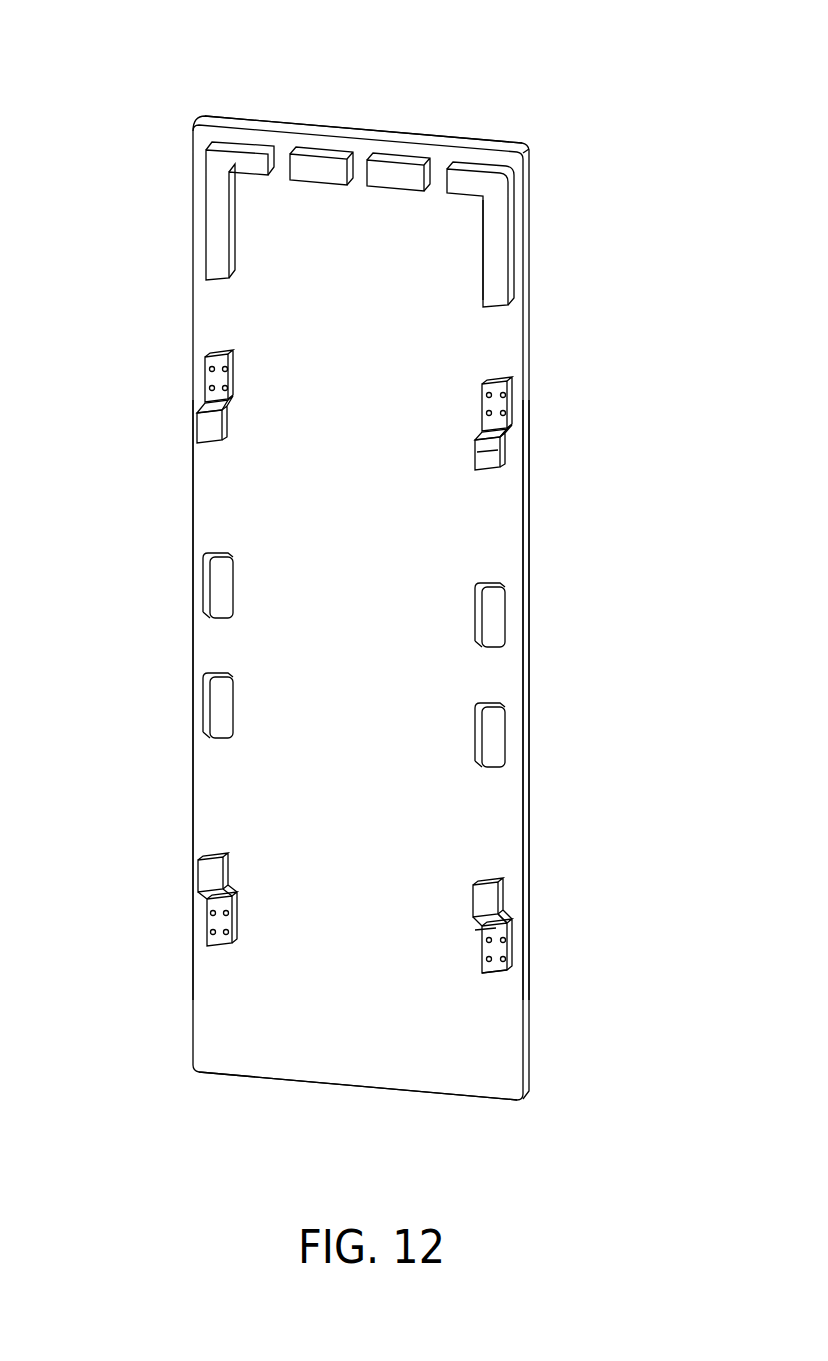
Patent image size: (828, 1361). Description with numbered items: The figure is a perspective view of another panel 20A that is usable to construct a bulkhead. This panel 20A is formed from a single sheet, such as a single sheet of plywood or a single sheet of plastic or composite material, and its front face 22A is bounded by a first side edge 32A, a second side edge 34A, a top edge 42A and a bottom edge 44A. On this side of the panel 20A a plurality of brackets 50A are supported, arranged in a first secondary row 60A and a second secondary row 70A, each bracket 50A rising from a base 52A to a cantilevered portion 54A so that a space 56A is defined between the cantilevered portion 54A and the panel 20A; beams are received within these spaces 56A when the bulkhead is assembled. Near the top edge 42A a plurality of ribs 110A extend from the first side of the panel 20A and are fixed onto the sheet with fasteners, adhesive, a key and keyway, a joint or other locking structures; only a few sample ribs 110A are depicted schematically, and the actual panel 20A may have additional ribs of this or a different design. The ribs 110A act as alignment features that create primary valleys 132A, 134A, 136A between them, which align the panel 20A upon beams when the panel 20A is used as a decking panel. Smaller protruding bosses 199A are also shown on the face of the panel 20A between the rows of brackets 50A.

The panel 20A is at (492, 670).
The front face of panel 22A is at (492, 815).
The first side edge 32A is at (191, 790).
The second side edge 34A is at (524, 553).
The top edge 42A is at (343, 130).
The bottom edge 44A is at (403, 1092).
The bracket 50A is at (371, 672).
The bracket base 52A is at (482, 967).
The cantilevered portion 54A is at (493, 457).
The space 56A is at (511, 444).
The first secondary row 60A is at (218, 368).
The second secondary row 70A is at (205, 926).
The rib 110A is at (222, 160).
The primary valley 132A is at (358, 168).
The primary valley 134A is at (282, 158).
The primary valley 136A is at (443, 173).
The protruding boss 199A is at (493, 732).